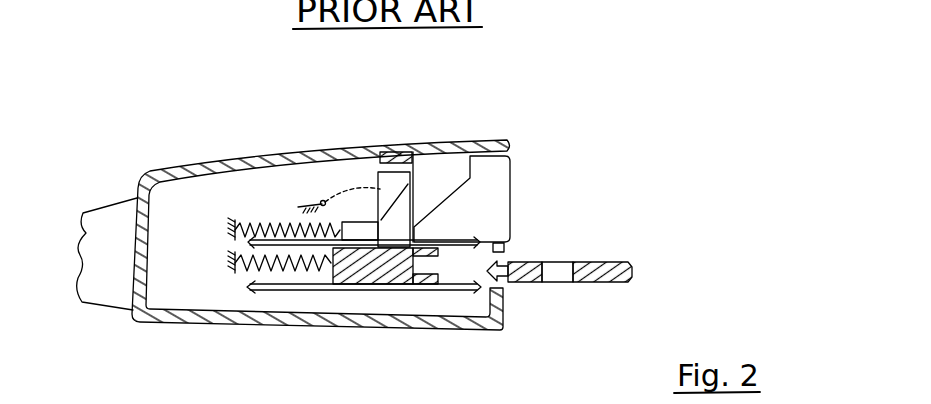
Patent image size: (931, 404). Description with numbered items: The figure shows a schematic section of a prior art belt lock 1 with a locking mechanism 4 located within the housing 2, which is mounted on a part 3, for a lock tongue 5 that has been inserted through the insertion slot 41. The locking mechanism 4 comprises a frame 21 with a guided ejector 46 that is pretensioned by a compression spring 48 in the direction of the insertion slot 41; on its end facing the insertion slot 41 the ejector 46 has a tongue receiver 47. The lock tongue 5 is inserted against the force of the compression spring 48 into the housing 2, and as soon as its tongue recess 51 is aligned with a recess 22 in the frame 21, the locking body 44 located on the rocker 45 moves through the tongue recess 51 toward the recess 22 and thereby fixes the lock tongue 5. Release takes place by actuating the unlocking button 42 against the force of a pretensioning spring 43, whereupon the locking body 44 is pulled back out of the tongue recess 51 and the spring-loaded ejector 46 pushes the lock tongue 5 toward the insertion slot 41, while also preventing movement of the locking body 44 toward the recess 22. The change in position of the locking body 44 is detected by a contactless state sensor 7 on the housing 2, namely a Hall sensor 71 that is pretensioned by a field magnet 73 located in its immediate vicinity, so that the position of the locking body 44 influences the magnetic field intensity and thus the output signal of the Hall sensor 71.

The locking device 1 is at (157, 125).
The housing 2 is at (262, 158).
The mounting part 3 is at (103, 222).
The locking mechanism 4 is at (200, 248).
The lock tongue 5 is at (594, 268).
The contactless state sensor 7 is at (355, 164).
The frame 21 is at (289, 288).
The recess 22 is at (390, 288).
The insertion slot 41 is at (516, 248).
The unlocking button 42 is at (512, 198).
The pretensioning spring 43 is at (243, 223).
The locking body 44 is at (421, 190).
The rocker 45 is at (337, 193).
The ejector 46 is at (343, 286).
The tongue receiver 47 is at (448, 271).
The compression spring 48 is at (240, 272).
The tongue recess 51 is at (562, 280).
The Hall sensor 71 is at (372, 165).
The field magnet 73 is at (402, 156).